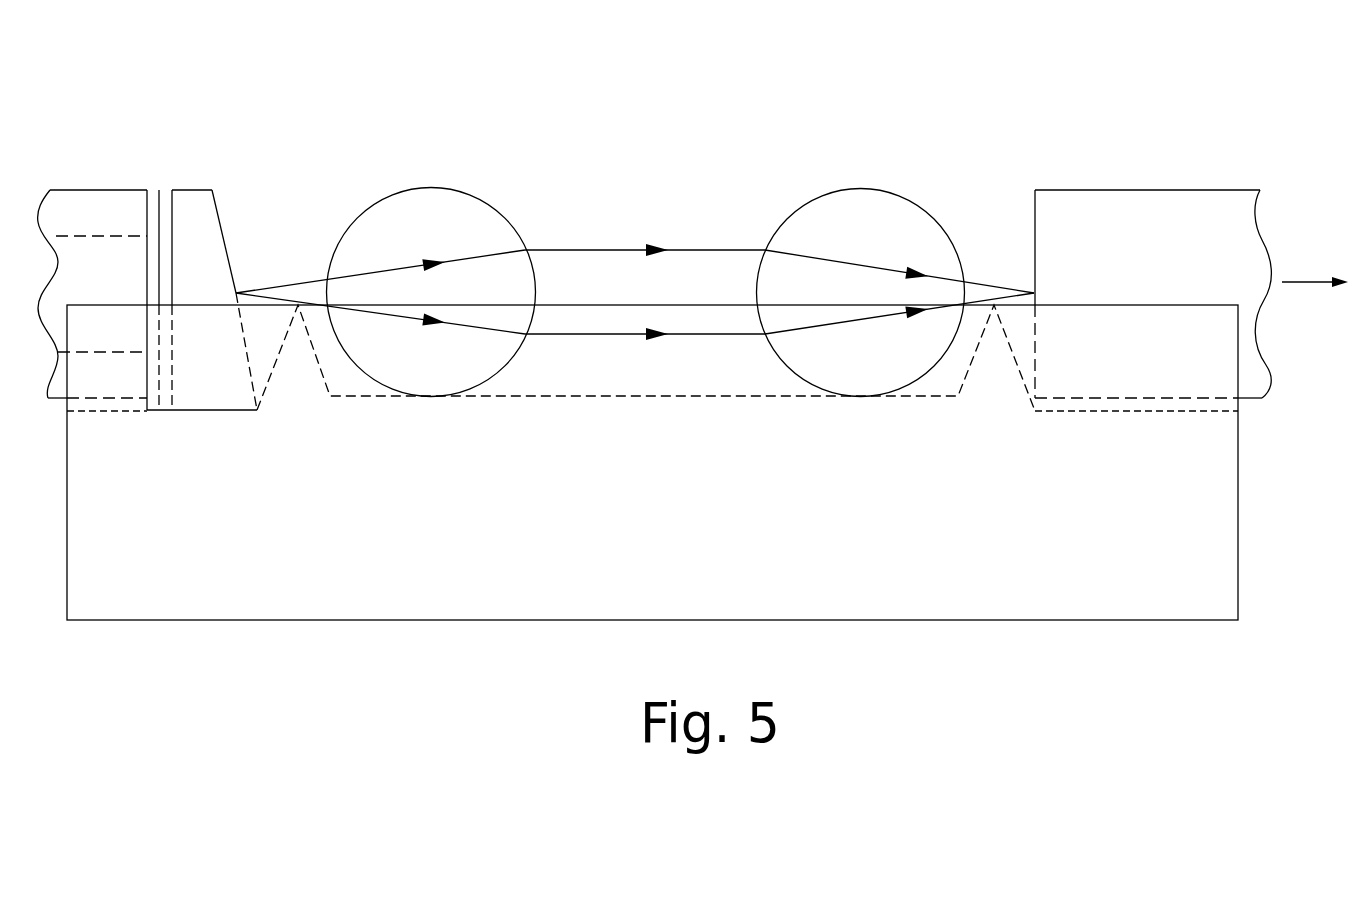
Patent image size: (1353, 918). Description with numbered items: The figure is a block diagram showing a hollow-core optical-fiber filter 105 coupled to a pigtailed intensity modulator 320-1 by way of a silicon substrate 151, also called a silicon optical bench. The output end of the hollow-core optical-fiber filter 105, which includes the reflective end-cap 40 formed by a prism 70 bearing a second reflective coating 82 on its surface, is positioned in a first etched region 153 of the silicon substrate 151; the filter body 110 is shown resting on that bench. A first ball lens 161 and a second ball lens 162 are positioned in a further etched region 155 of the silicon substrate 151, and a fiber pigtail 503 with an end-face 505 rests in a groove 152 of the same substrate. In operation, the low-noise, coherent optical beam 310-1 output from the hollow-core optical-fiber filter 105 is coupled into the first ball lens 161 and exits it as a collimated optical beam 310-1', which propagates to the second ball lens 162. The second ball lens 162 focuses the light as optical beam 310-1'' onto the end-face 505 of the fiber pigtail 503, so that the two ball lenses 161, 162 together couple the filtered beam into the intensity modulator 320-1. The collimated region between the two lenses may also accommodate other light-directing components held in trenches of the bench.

The hollow-core optical-fiber filter 105 is at (258, 118).
The second reflective coating 82 is at (147, 187).
The prism 70 is at (193, 187).
The laser chip 110 is at (113, 275).
The reflective end-cap 40 is at (257, 413).
The first etched region 153 is at (123, 412).
The etched region 155 is at (567, 397).
The groove 152 is at (1130, 412).
The silicon substrate 151 is at (953, 568).
The first ball lens 161 is at (429, 187).
The second ball lens 162 is at (862, 188).
The optical beam 310-1 is at (380, 250).
The collimated optical beam 310-1' is at (645, 264).
The focused optical beam 310-1'' is at (899, 251).
The end-face 505 is at (1028, 198).
The fiber pigtail 503 is at (1169, 253).
The pigtailed intensity modulator 320-1 is at (1315, 336).